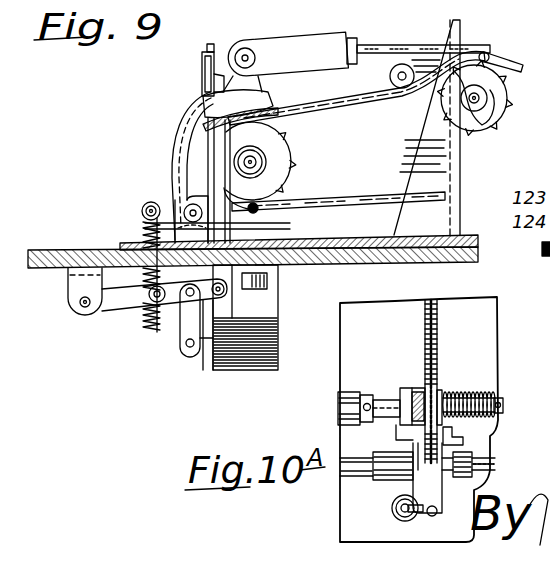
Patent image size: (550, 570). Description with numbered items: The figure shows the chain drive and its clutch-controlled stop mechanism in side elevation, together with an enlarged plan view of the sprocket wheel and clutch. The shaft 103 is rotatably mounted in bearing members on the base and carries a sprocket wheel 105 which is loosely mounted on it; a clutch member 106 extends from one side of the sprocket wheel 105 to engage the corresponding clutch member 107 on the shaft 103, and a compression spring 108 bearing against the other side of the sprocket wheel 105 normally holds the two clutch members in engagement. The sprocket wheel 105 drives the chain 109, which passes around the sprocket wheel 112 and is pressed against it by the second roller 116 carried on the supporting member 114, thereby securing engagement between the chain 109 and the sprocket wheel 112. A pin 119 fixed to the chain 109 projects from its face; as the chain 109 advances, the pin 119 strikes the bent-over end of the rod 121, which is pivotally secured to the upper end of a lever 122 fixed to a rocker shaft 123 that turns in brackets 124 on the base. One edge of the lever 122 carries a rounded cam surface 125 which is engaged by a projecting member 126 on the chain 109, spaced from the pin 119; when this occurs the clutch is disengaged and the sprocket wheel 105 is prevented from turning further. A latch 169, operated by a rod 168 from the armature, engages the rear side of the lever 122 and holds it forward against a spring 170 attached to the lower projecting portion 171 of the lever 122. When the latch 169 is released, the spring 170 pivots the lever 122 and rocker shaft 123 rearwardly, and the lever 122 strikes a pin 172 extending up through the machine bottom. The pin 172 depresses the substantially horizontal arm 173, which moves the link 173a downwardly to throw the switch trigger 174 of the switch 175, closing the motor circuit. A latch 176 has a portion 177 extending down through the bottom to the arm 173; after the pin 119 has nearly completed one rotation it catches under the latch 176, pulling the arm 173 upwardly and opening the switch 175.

In FIG. 9, the shaft 103 is at (266, 162).
In FIG. 10A, the shaft 103 is at (380, 396).
In FIG. 9, the sprocket wheel 105 is at (280, 138).
In FIG. 10A, the sprocket wheel 105 is at (437, 371).
In FIG. 10A, the clutch member 106 is at (422, 388).
In FIG. 10A, the clutch member 107 is at (405, 388).
In FIG. 10A, the compression spring 108 is at (482, 396).
In FIG. 9, the chain 109 is at (338, 102).
In FIG. 10A, the chain 109 is at (437, 314).
In FIG. 9, the sprocket wheel 112 is at (492, 96).
In FIG. 9, the supporting member 114 is at (430, 153).
In FIG. 9, the second roller 116 is at (403, 64).
In FIG. 9, the pin 119 is at (490, 56).
In FIG. 9, the rod 121 is at (470, 45).
In FIG. 9, the lever 122 is at (240, 88).
In FIG. 10A, the lever 122 is at (400, 483).
In FIG. 9, the rocker shaft 123 is at (187, 200).
In FIG. 10A, the rocker shaft 123 is at (480, 458).
In FIG. 9, the brackets 124 is at (198, 231).
In FIG. 10A, the brackets 124 is at (473, 443).
In FIG. 9, the cam surface 125 is at (203, 120).
In FIG. 9, the projecting member 126 is at (288, 193).
In FIG. 10A, the projecting member 126 is at (400, 425).
In FIG. 9, the rod 168 is at (202, 76).
In FIG. 9, the latch 169 is at (212, 47).
In FIG. 9, the spring 170 is at (150, 330).
In FIG. 10A, the spring 170 is at (392, 508).
In FIG. 9, the lower projecting portion 171 is at (142, 206).
In FIG. 10A, the lower projecting portion 171 is at (404, 518).
In FIG. 9, the pin 172 is at (125, 240).
In FIG. 10A, the pin 172 is at (429, 516).
In FIG. 9, the arm 173 is at (112, 300).
In FIG. 9, the link 173a is at (185, 322).
In FIG. 9, the switch trigger 174 is at (207, 350).
In FIG. 9, the switch 175 is at (248, 358).
In FIG. 9, the latch 176 is at (212, 93).
In FIG. 9, the portion 177 is at (193, 146).